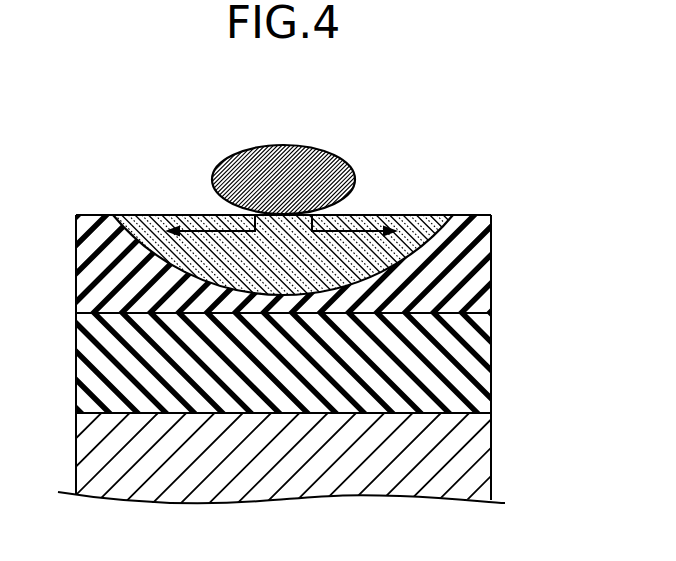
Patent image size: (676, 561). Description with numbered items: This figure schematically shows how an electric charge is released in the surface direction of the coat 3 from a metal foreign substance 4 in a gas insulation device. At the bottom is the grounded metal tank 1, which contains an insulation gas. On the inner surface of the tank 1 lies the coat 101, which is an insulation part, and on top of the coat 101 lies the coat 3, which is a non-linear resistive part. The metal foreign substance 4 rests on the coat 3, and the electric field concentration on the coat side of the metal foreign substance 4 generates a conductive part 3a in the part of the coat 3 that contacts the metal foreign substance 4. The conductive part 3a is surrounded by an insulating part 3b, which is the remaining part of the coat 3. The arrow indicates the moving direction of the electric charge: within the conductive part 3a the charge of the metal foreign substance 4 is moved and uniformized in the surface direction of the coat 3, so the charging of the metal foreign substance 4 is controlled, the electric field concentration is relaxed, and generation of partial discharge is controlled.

The tank 1 is at (492, 460).
The coat 101 is at (492, 365).
The coat 3 is at (309, 240).
The conductive part 3a is at (433, 232).
The insulating part 3b is at (492, 258).
The metal foreign substance 4 is at (283, 146).